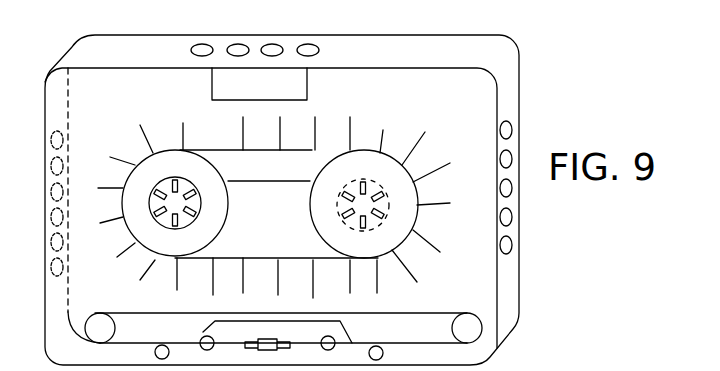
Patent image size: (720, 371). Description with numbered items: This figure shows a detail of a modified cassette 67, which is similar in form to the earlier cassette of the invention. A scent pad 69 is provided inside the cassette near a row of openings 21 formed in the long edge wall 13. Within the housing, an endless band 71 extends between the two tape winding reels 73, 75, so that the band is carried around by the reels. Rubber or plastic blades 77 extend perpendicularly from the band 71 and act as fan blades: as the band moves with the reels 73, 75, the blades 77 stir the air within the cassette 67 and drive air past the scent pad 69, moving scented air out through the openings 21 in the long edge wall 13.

The long edge wall 13 is at (497, 46).
The openings 21 is at (312, 45).
The cassette 67 is at (577, 258).
The scent pad 69 is at (307, 85).
The endless band 71 is at (288, 152).
The tape winding reel 73 is at (228, 222).
The tape winding reel 75 is at (310, 224).
The blades 77 is at (122, 153).